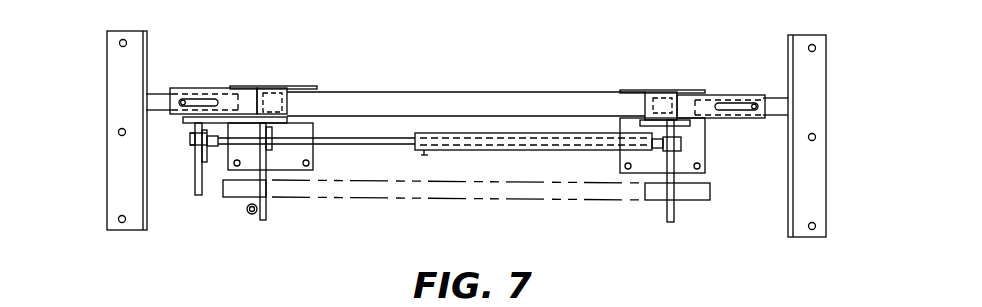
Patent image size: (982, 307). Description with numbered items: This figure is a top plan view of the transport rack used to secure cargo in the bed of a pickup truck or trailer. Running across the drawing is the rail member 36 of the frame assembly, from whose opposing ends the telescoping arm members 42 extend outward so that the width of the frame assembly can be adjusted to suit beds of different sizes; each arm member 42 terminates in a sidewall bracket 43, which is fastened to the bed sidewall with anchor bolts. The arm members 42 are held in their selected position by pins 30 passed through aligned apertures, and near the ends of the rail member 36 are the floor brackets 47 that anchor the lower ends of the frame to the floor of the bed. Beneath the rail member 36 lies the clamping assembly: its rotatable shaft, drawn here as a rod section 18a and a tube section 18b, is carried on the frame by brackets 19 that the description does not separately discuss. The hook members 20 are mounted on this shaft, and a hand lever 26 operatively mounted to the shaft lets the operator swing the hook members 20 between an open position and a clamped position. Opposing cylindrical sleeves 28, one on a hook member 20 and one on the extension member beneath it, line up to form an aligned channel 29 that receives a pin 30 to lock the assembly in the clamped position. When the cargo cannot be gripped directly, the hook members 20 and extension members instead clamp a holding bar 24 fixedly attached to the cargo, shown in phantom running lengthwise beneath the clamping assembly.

The sidewall brackets 43 is at (110, 38).
The telescoping arm members 42 is at (160, 99).
The clamp bracket 19 is at (272, 126).
The rod 18a is at (368, 137).
The rail member 36 is at (463, 97).
The tube 18b is at (545, 140).
The pin 30 is at (735, 103).
The floor brackets 47 is at (313, 155).
The hand lever 26 is at (195, 181).
The cylindrical sleeves 28 is at (250, 207).
The aligned channel 29 is at (253, 215).
The hook members 20 is at (265, 217).
The holding bar 24 is at (553, 194).